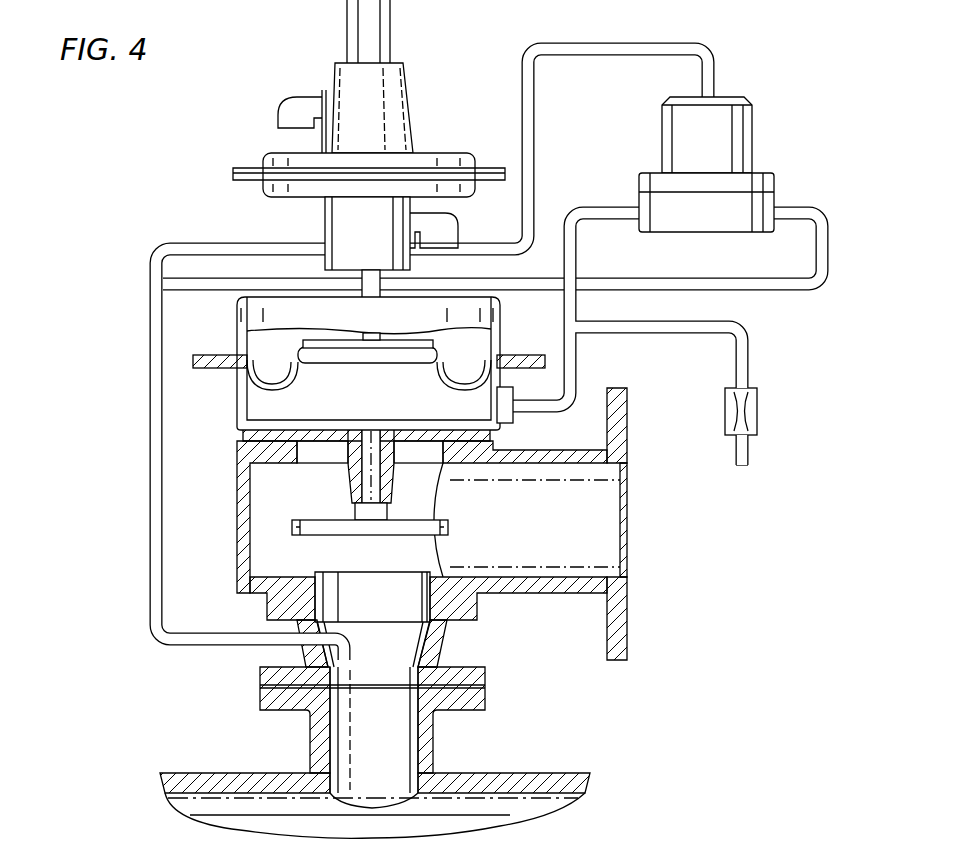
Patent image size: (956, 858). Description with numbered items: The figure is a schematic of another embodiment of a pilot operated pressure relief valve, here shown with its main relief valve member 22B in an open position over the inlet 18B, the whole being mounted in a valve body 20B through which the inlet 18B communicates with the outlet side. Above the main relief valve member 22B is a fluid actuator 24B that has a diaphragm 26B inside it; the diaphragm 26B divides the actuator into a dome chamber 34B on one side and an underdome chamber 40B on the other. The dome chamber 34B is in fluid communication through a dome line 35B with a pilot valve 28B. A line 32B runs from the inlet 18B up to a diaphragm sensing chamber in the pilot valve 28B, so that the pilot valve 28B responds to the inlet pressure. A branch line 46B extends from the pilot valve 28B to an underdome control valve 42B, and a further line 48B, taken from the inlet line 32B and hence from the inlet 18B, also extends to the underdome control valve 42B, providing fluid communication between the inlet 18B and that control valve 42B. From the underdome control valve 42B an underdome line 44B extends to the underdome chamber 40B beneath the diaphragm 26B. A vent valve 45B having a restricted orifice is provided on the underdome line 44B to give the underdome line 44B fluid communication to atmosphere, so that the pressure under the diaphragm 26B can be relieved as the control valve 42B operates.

The inlet 18B is at (405, 745).
The valve body 20B is at (608, 518).
The main relief valve member 22B is at (448, 523).
The fluid actuator 24B is at (232, 324).
The diaphragm 26B is at (287, 370).
The pilot valve 28B is at (468, 30).
The line 32B is at (152, 330).
The dome chamber 34B is at (477, 338).
The dome line 35B is at (370, 270).
The underdome chamber 40B is at (460, 419).
The underdome control valve 42B is at (770, 90).
The underdome line 44B is at (578, 255).
The vent valve 45B is at (757, 408).
The branch line 46B is at (658, 42).
The line 48B is at (793, 290).